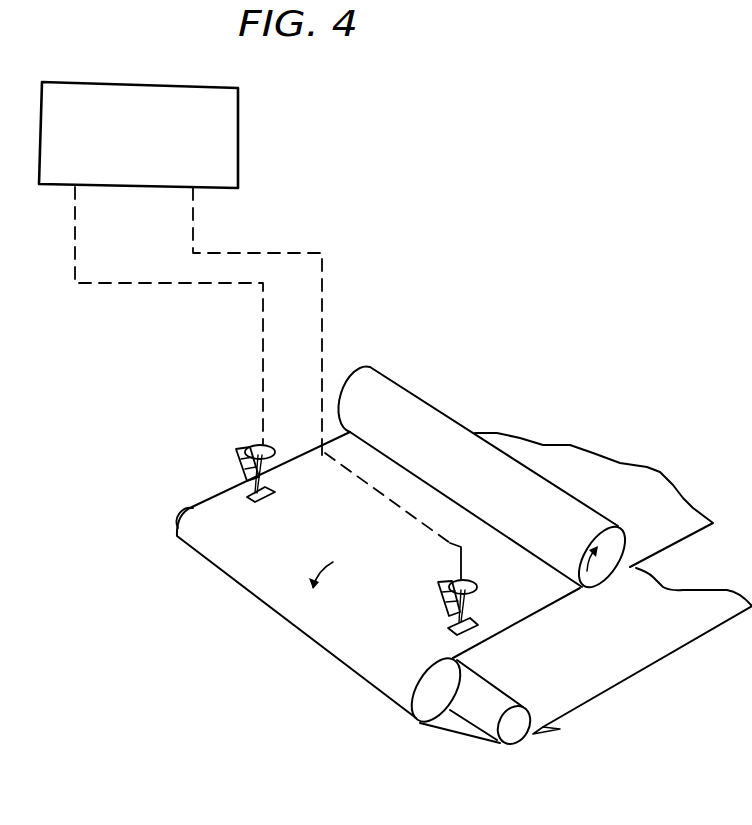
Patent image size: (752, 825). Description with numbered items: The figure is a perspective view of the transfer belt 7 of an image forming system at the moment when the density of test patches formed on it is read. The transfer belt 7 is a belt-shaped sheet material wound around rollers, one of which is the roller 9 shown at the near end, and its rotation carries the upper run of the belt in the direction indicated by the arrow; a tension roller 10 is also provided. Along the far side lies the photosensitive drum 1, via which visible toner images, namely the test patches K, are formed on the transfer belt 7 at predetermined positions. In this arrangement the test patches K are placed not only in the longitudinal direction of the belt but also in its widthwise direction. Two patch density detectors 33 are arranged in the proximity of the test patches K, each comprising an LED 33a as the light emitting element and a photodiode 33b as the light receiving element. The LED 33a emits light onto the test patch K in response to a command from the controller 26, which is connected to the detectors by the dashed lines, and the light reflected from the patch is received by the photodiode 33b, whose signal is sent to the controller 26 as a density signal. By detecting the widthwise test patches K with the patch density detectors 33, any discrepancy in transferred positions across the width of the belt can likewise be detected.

The photosensitive drum 1 is at (595, 522).
The transfer belt 7 is at (363, 673).
The roller 9 is at (424, 713).
The tension roller 10 is at (497, 698).
The controller 26 is at (239, 132).
The patch density detector 33 is at (347, 518).
The LED 33a is at (237, 462).
The photodiode 33b is at (273, 447).
The test patch K is at (275, 493).